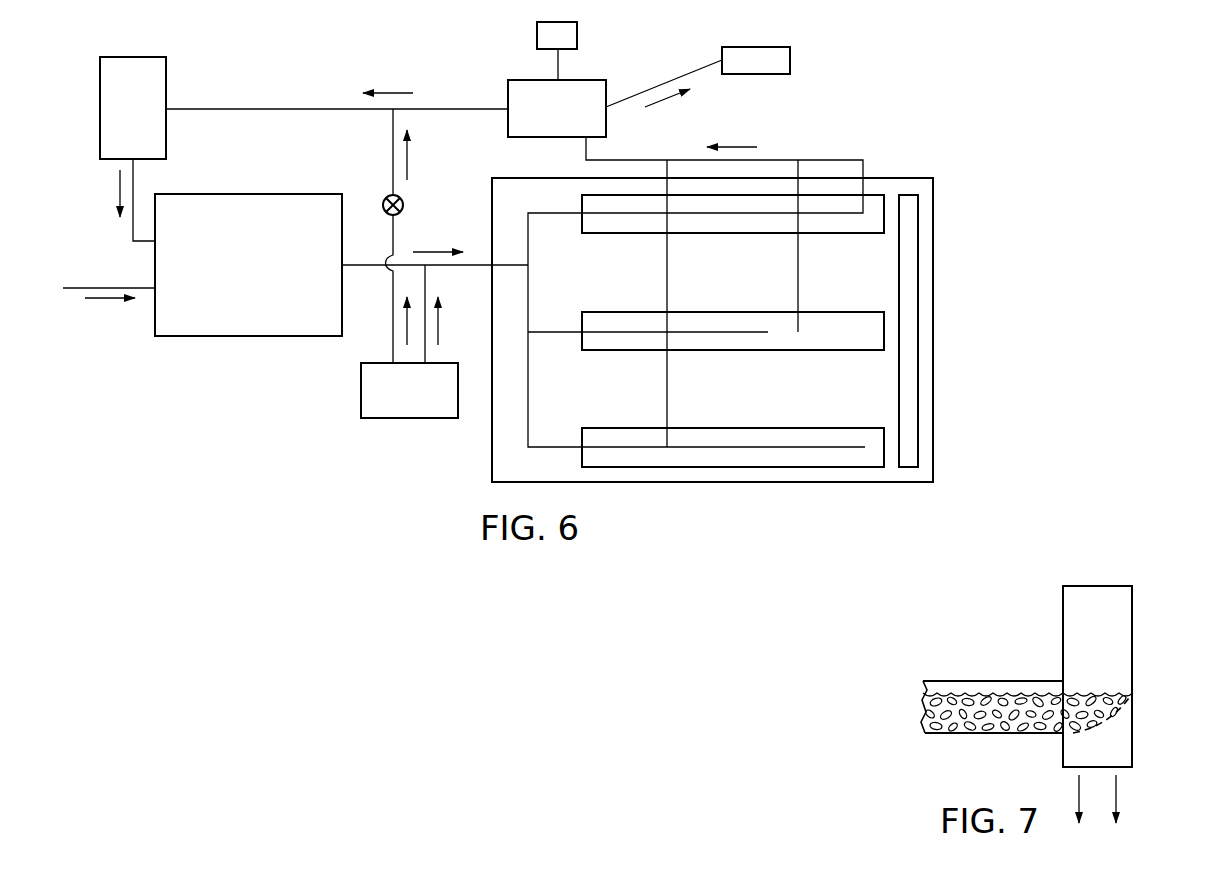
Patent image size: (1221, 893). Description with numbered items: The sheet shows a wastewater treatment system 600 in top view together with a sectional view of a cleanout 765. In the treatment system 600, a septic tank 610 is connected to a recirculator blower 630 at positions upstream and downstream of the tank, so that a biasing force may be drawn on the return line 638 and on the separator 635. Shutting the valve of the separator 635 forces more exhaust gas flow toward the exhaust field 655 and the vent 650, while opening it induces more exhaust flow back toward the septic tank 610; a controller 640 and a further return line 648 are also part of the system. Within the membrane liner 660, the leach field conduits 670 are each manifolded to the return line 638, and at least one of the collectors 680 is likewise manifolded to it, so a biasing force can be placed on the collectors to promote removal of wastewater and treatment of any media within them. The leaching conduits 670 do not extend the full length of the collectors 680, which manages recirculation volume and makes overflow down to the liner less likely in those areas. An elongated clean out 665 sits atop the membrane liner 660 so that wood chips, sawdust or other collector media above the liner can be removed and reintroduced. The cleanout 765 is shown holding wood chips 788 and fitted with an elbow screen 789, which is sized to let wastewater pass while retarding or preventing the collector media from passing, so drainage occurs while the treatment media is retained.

In FIG. 6, the treatment system 600 is at (916, 60).
In FIG. 6, the septic tank 610 is at (269, 279).
In FIG. 6, the recirculator blower 630 is at (431, 404).
In FIG. 6, the separator 635 is at (579, 122).
In FIG. 6, the return line 638 is at (654, 160).
In FIG. 6, the controller 640 is at (155, 122).
In FIG. 6, the return line 648 is at (260, 108).
In FIG. 6, the vent 650 is at (578, 35).
In FIG. 6, the exhaust field 655 is at (762, 47).
In FIG. 6, the membrane liner 660 is at (934, 416).
In FIG. 6, the clean out 665 is at (919, 218).
In FIG. 6, the leach field conduits 670 is at (707, 333).
In FIG. 6, the collectors 680 is at (612, 234).
In FIG. 7, the cleanout 765 is at (1126, 659).
In FIG. 7, the wood chips 788 is at (1017, 700).
In FIG. 7, the elbow screen 789 is at (1107, 720).